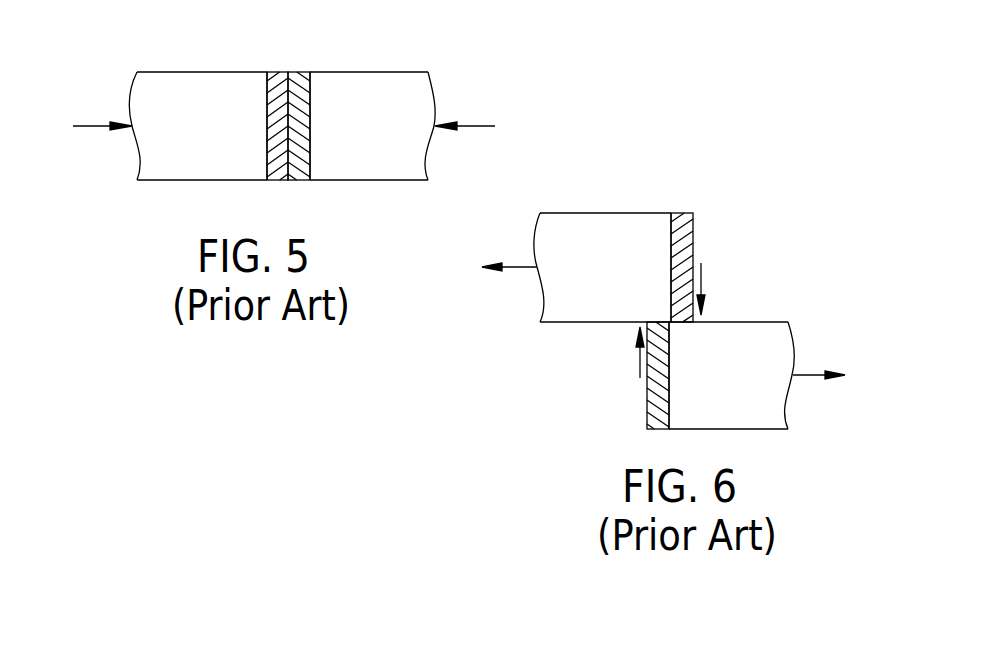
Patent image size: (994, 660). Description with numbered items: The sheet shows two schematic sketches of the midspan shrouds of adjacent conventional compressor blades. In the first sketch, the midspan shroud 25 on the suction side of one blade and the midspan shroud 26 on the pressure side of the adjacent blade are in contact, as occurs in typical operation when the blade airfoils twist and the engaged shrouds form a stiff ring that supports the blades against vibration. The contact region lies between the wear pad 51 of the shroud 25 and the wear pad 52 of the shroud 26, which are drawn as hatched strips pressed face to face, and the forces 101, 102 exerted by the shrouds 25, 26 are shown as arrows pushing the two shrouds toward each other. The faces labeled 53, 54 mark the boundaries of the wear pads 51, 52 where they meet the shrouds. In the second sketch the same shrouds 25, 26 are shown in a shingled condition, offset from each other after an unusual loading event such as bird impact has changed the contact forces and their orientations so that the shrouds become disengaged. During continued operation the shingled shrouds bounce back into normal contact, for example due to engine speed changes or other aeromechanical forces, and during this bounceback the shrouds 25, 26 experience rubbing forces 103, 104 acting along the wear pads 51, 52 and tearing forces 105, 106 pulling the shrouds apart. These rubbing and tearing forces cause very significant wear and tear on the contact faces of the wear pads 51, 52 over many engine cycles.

In FIG. 5, the midspan shroud on the suction side 25 is at (203, 162).
In FIG. 6, the midspan shroud on the suction side 25 is at (577, 303).
In FIG. 5, the midspan shroud on the pressure side 26 is at (370, 155).
In FIG. 6, the midspan shroud on the pressure side 26 is at (748, 413).
In FIG. 5, the wear pad 51 is at (278, 162).
In FIG. 6, the wear pad 51 is at (687, 242).
In FIG. 5, the wear pad 52 is at (298, 163).
In FIG. 6, the wear pad 52 is at (657, 406).
In FIG. 5, the first interface surface 53 is at (267, 88).
In FIG. 6, the first interface surface 53 is at (671, 233).
In FIG. 5, the second interface surface 54 is at (316, 85).
In FIG. 6, the second interface surface 54 is at (668, 407).
In FIG. 5, the force 101 is at (96, 125).
In FIG. 5, the force 102 is at (474, 125).
In FIG. 6, the rubbing force 103 is at (703, 278).
In FIG. 6, the rubbing force 104 is at (639, 365).
In FIG. 6, the tearing force 105 is at (520, 268).
In FIG. 6, the tearing force 106 is at (807, 373).